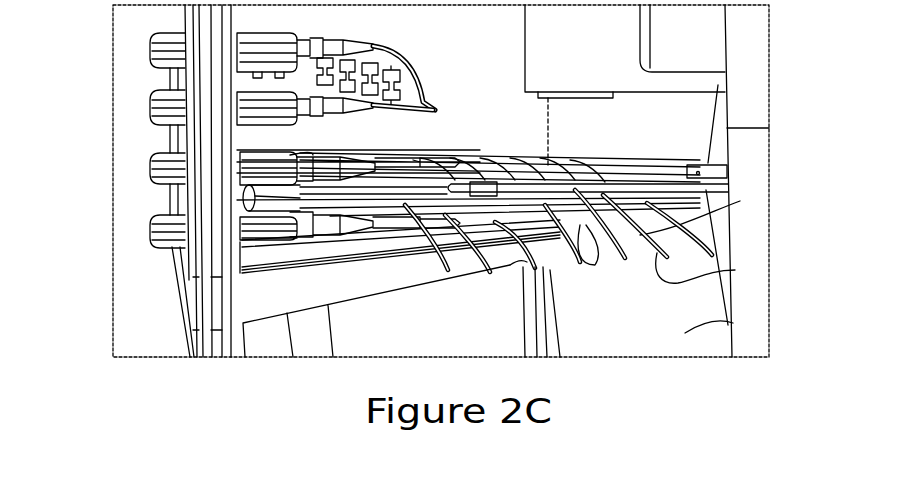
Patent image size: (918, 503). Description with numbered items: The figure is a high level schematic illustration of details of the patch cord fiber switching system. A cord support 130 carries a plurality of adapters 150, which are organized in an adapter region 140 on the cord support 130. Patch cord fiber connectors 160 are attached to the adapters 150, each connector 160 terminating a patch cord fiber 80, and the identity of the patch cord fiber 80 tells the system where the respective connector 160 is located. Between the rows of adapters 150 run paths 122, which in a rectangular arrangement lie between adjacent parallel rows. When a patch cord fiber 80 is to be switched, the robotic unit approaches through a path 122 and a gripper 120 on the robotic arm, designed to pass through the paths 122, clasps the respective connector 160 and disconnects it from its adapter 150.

The patch cord fiber connector 160 is at (250, 107).
The adapter 150 is at (245, 187).
The path 122 is at (268, 200).
The gripper 120 is at (740, 201).
The patch cord fiber 80 is at (735, 270).
The cord support 130 is at (733, 323).
The adapter region 140 is at (862, 75).